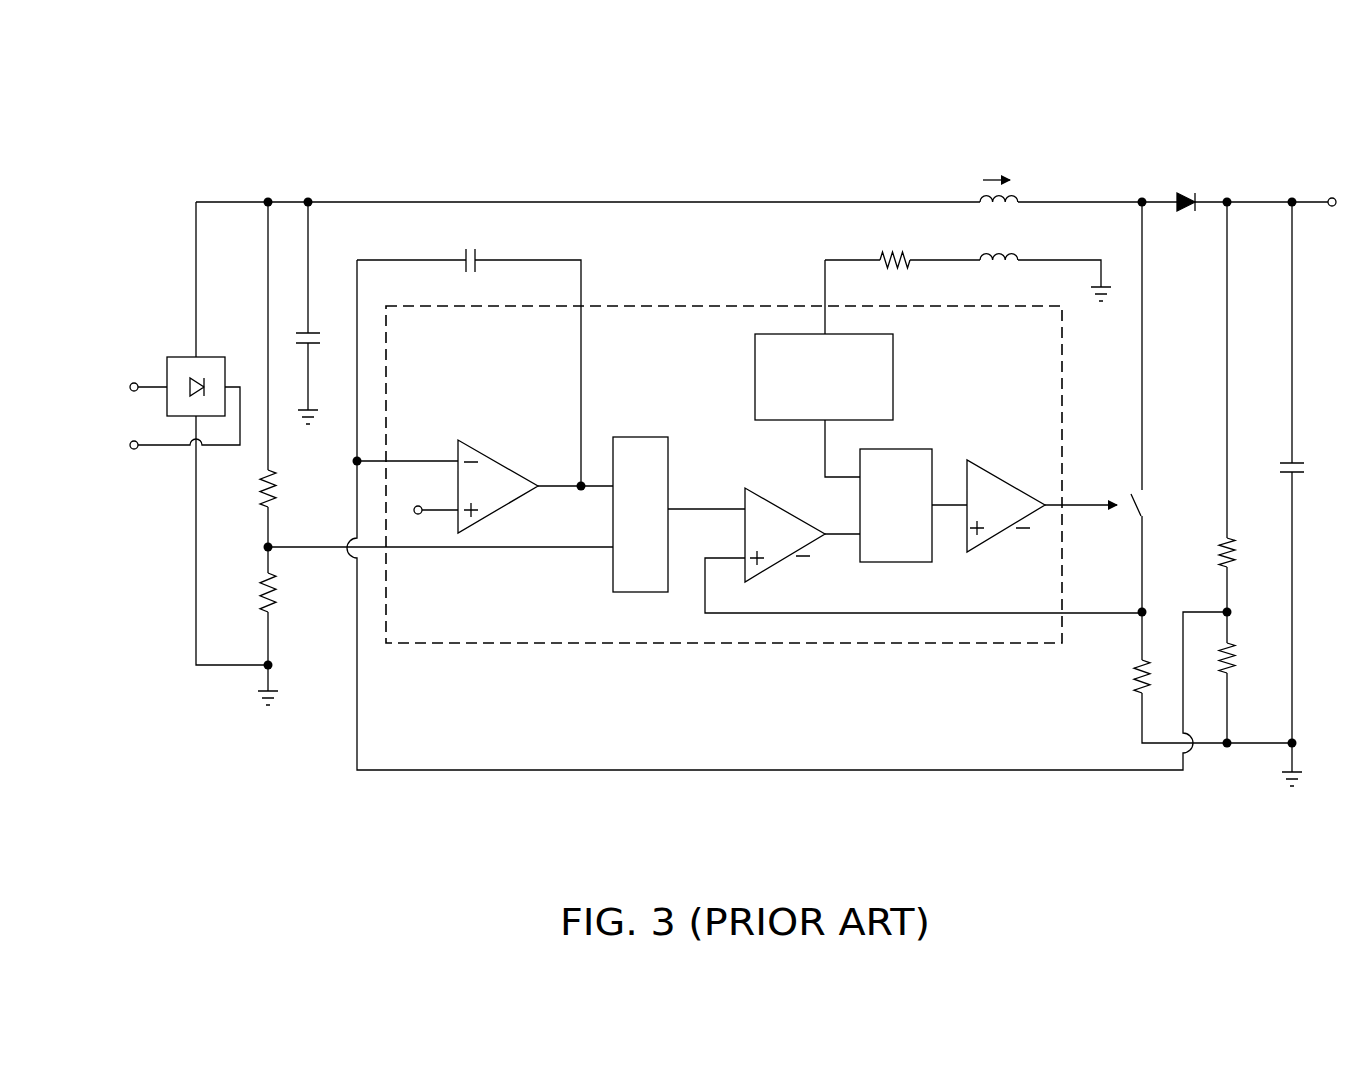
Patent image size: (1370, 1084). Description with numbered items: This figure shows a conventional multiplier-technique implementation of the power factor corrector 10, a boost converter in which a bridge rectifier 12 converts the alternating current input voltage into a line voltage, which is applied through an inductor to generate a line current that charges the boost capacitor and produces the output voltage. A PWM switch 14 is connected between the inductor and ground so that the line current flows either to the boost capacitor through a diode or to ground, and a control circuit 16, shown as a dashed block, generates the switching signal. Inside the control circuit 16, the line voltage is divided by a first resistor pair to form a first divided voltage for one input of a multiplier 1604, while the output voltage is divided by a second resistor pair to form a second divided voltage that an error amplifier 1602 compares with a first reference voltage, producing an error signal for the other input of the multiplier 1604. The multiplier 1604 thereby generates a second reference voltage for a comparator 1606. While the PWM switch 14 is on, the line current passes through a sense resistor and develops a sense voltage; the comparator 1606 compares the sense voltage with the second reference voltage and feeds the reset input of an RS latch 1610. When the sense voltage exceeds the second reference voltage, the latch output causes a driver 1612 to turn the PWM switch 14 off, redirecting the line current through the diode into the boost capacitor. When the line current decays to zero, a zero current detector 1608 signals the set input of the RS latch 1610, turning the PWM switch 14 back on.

The power factor corrector 10 is at (1313, 125).
The bridge rectifier 12 is at (182, 356).
The PWM switch 14 is at (1152, 490).
The control circuit 16 is at (727, 305).
The error amplifier 1602 is at (502, 453).
The multiplier 1604 is at (628, 437).
The comparator 1606 is at (786, 504).
The zero current detector 1608 is at (755, 372).
The RS latch 1610 is at (907, 449).
The driver 1612 is at (1003, 478).